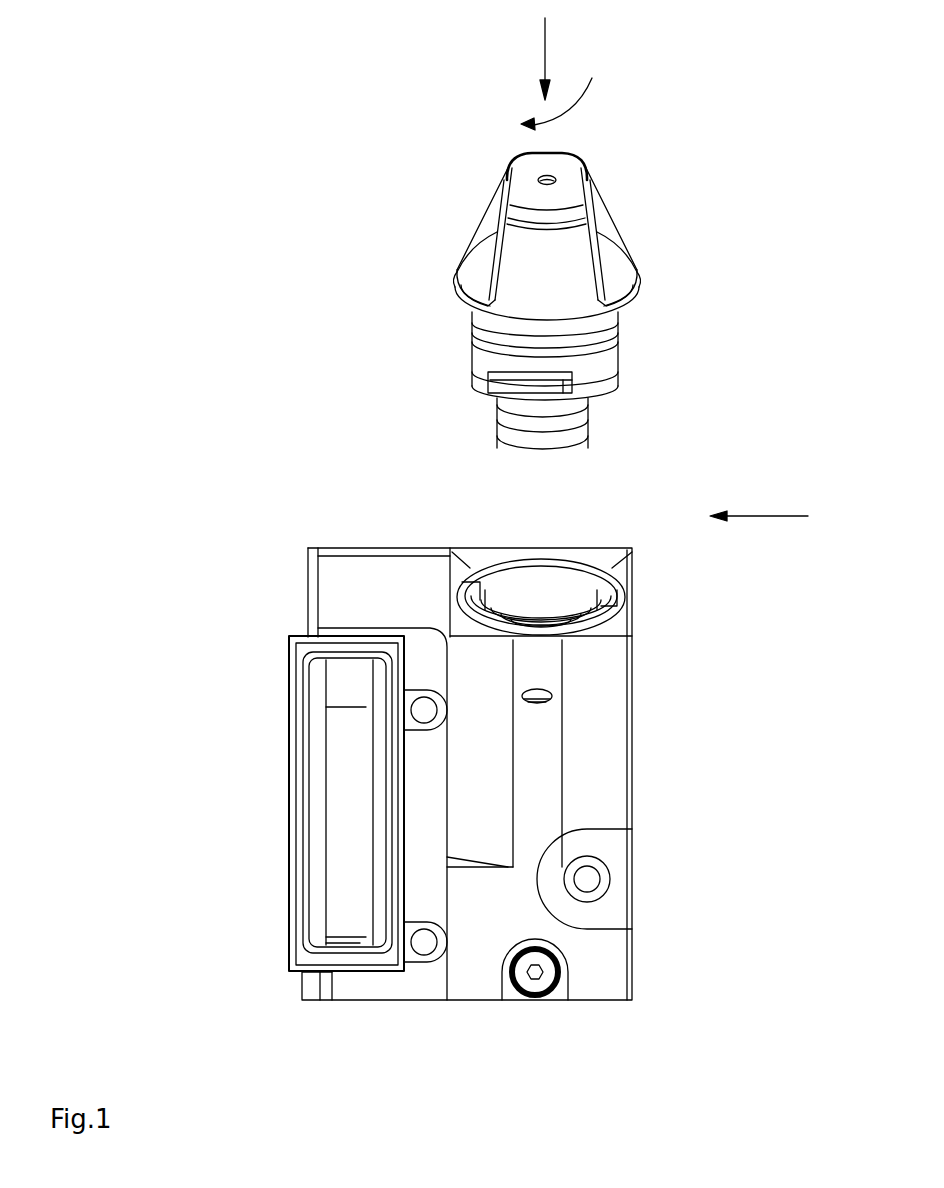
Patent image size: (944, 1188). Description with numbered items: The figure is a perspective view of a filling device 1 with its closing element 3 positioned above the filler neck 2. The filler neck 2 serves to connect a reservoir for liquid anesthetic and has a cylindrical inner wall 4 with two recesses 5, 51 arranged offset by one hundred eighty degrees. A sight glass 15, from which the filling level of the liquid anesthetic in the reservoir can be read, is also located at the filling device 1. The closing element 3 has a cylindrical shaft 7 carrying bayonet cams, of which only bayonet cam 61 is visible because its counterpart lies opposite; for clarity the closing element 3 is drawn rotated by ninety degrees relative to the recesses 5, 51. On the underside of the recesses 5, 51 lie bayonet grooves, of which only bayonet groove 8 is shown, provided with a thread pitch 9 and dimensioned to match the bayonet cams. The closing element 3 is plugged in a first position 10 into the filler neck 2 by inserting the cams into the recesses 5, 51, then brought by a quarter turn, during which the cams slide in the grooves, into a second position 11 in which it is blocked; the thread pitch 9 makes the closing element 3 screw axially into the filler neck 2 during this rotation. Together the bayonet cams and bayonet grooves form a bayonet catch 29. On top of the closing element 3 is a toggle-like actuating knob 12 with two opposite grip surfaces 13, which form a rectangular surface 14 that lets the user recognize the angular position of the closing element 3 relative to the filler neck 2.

The filling device 1 is at (192, 766).
The filler neck 2 is at (570, 580).
The closing element 3 is at (630, 297).
The cylindrical inner wall 4 is at (510, 575).
The recess 5 is at (470, 590).
The cylindrical shaft 7 is at (505, 360).
The bayonet groove 8 is at (550, 603).
The thread pitch 9 is at (503, 590).
The first position 10 is at (562, 53).
The second position 11 is at (575, 97).
The actuating knob 12 is at (532, 268).
The grip surfaces 13 is at (503, 210).
The rectangular surface 14 is at (552, 177).
The sight glass 15 is at (335, 840).
The bayonet catch 29 is at (777, 518).
The recess 51 is at (613, 590).
The bayonet cam 61 is at (570, 377).